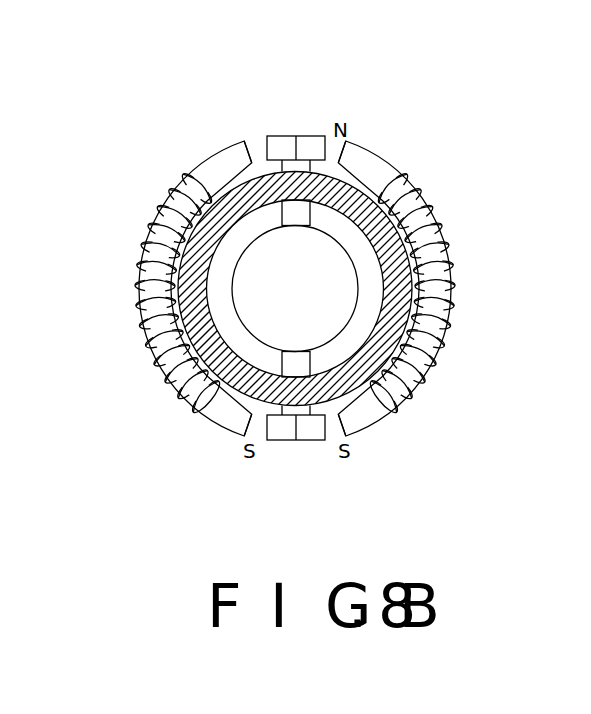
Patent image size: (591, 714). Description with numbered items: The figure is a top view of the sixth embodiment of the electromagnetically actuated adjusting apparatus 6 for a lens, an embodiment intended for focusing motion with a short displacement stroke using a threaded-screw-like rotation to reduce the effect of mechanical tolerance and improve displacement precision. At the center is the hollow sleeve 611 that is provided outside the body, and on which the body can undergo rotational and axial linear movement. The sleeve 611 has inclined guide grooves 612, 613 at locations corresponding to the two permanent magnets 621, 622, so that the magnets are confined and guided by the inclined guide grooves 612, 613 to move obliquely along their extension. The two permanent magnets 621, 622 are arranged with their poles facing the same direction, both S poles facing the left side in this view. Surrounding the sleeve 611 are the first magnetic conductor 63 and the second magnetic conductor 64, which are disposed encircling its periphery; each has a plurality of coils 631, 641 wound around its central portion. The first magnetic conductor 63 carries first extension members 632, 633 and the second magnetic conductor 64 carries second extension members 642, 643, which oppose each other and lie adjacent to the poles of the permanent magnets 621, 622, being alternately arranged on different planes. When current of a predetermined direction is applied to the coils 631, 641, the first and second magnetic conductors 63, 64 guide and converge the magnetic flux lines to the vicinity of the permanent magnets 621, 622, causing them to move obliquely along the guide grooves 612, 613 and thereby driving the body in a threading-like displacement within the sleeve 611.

The electromagnetically actuated adjusting apparatus 6 is at (216, 108).
The hollow sleeve 611 is at (321, 182).
The inclined guide groove 612 is at (258, 436).
The inclined guide groove 613 is at (258, 141).
The permanent magnet 621 is at (306, 440).
The permanent magnet 622 is at (287, 136).
The first magnetic conductor 63 is at (141, 309).
The coils 631 is at (148, 347).
The first extension member 632 is at (193, 446).
The first extension member 633 is at (232, 156).
The second magnetic conductor 64 is at (452, 282).
The coils 641 is at (440, 228).
The second extension member 642 is at (406, 424).
The second extension member 643 is at (365, 152).